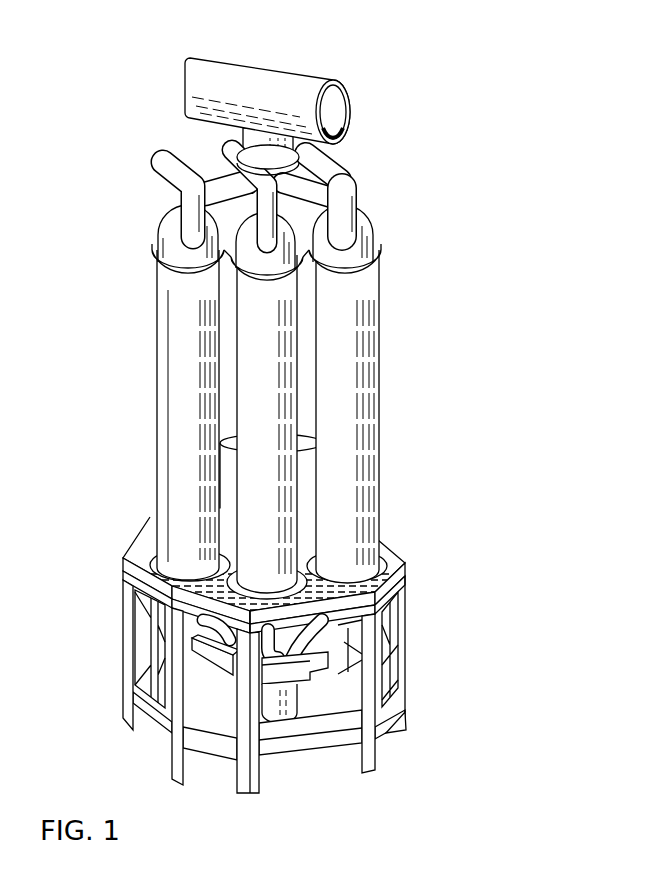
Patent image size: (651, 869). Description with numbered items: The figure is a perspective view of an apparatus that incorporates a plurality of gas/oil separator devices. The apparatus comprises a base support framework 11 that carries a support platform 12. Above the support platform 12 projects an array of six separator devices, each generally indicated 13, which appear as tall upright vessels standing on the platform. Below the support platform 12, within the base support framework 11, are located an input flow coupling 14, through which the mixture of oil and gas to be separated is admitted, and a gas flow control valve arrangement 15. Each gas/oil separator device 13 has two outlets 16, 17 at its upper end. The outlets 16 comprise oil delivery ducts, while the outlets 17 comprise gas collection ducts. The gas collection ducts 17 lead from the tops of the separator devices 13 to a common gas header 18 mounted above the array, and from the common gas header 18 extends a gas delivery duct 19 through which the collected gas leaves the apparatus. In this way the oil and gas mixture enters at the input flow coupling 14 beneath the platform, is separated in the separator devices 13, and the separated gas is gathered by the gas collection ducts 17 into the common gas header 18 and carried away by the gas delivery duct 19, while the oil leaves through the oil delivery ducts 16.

The base support framework 11 is at (104, 651).
The support platform 12 is at (142, 552).
The separator device 13 is at (190, 402).
The input flow coupling 14 is at (296, 714).
The gas flow control valve arrangement 15 is at (324, 675).
The outlet 16 is at (348, 190).
The outlet 17 is at (208, 154).
The common gas header 18 is at (352, 174).
The gas delivery duct 19 is at (279, 73).